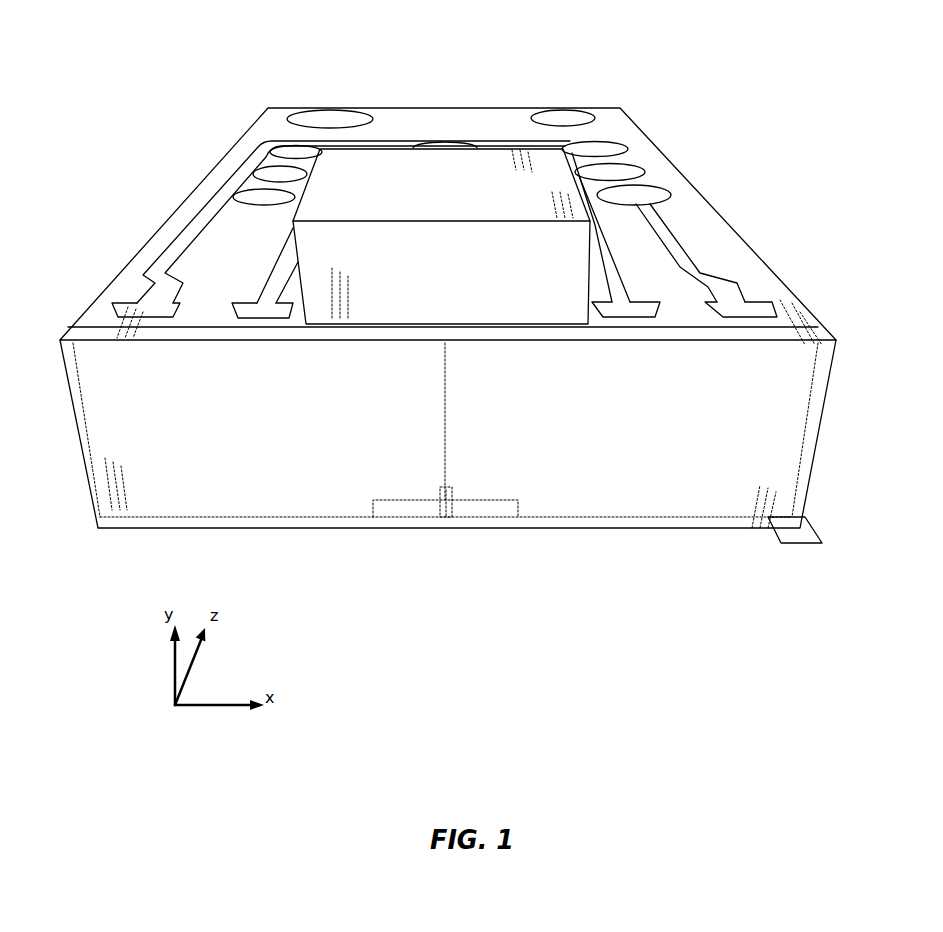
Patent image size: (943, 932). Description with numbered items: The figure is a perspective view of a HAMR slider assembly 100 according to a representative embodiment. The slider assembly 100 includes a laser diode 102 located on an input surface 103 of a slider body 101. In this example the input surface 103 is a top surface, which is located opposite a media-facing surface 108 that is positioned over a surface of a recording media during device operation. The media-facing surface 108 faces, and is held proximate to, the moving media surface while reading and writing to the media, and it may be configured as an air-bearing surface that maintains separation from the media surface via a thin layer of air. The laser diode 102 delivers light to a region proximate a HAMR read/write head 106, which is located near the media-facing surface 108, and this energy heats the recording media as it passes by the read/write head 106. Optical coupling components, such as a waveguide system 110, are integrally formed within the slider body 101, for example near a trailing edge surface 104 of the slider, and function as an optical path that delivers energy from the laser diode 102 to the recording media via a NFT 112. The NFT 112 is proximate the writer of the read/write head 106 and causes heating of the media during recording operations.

The HAMR slider assembly 100 is at (632, 50).
The slider body 101 is at (245, 135).
The laser diode 102 is at (400, 158).
The input surface 103 is at (123, 287).
The trailing edge surface 104 is at (157, 505).
The read/write head 106 is at (452, 517).
The media-facing surface 108 is at (812, 545).
The waveguide system 110 is at (445, 408).
The NFT 112 is at (445, 517).